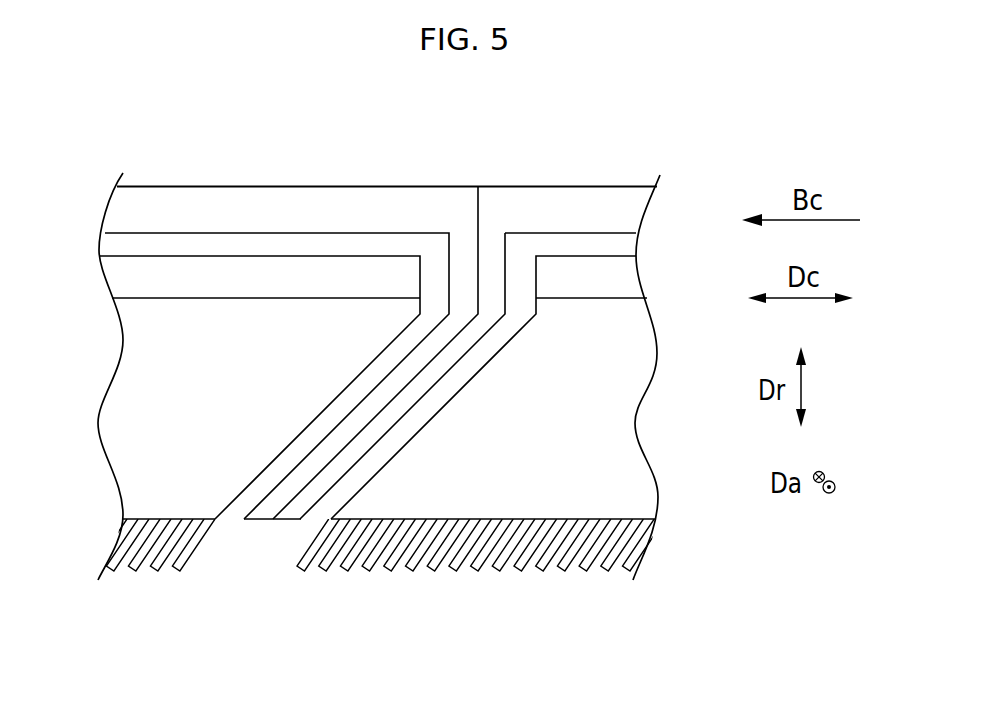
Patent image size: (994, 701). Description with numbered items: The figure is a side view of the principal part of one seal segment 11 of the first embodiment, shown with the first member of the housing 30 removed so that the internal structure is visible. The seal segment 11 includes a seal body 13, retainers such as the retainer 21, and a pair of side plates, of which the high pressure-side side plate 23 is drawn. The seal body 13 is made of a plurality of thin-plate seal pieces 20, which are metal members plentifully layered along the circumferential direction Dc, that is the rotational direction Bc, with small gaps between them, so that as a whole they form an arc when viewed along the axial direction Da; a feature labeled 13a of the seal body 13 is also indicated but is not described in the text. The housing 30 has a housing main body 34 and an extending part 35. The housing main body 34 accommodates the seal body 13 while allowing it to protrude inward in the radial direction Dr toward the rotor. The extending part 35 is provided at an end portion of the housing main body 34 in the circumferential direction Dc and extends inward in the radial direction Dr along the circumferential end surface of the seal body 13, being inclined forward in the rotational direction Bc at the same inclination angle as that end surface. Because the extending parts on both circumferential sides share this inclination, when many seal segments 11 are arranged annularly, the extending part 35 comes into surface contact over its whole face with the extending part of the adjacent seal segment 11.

The seal segment 11 is at (655, 155).
The housing main body 34 is at (555, 203).
The housing 30 is at (492, 203).
The retainer 21 is at (637, 282).
The extending part 35 is at (257, 520).
The seal body 13 is at (452, 545).
The opening in substrate 13a is at (331, 542).
The thin-plate seal piece 20 is at (537, 542).
The high pressure-side side plate 23 is at (583, 453).